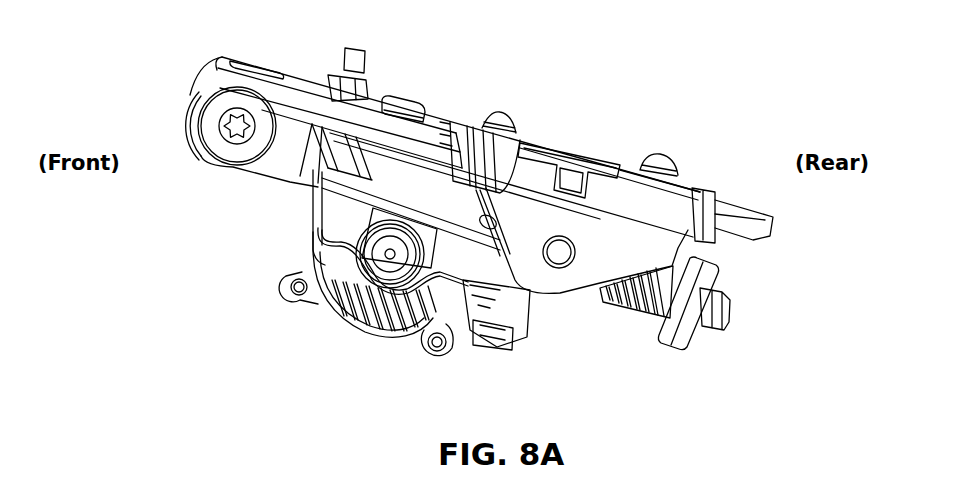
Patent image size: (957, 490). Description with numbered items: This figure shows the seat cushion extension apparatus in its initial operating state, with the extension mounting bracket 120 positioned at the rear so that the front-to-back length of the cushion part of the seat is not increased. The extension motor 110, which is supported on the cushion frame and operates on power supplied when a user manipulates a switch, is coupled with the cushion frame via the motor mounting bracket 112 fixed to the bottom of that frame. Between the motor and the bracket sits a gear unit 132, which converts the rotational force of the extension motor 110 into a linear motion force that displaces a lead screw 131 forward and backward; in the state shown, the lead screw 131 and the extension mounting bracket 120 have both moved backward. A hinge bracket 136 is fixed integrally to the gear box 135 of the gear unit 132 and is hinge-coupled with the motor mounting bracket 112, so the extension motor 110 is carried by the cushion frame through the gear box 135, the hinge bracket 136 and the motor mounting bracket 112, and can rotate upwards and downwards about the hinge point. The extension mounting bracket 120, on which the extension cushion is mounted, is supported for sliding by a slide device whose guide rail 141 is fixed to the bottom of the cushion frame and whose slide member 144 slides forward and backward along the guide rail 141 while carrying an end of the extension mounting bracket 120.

The extension motor 110 is at (333, 312).
The motor mounting bracket 112 is at (660, 247).
The extension mounting bracket 120 is at (222, 58).
The lead screw 131 is at (640, 312).
The gear unit 132 is at (404, 177).
The gear box 135 is at (463, 200).
The hinge bracket 136 is at (517, 212).
The guide rail 141 is at (614, 196).
The slide member 144 is at (393, 123).